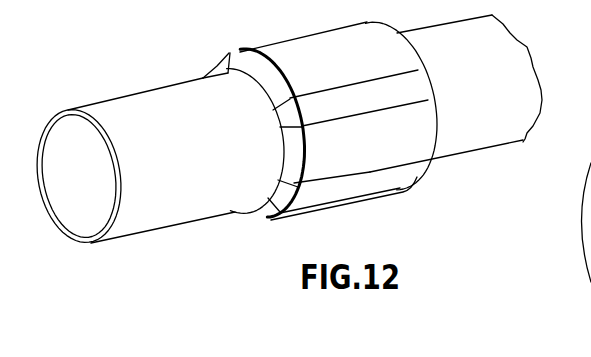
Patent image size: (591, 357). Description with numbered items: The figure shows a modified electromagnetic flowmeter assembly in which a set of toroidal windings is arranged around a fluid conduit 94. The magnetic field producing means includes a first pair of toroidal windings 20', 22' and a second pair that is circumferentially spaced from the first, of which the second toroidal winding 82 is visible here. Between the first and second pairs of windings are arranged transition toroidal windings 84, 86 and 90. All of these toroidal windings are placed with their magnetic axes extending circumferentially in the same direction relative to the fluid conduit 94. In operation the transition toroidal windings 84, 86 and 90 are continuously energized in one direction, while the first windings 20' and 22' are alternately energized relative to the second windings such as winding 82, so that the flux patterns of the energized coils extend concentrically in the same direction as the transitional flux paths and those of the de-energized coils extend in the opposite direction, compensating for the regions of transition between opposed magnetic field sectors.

The first toroidal winding 22' is at (136, 179).
The first toroidal winding 20' is at (232, 141).
The transition toroidal winding 84 is at (217, 73).
The transition toroidal winding 86 is at (285, 118).
The second toroidal winding 82 is at (367, 158).
The transition toroidal winding 90 is at (416, 174).
The fluid conduit 94 is at (524, 75).